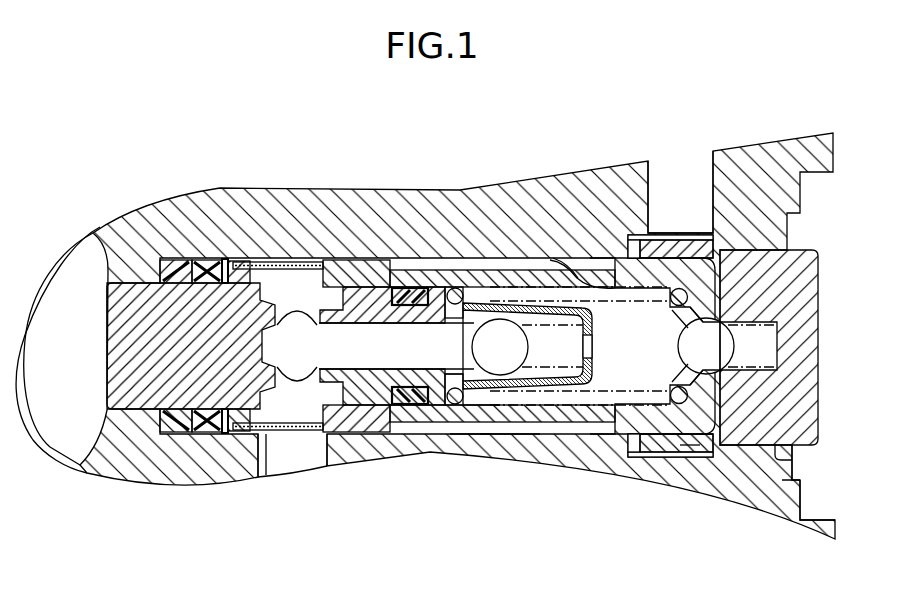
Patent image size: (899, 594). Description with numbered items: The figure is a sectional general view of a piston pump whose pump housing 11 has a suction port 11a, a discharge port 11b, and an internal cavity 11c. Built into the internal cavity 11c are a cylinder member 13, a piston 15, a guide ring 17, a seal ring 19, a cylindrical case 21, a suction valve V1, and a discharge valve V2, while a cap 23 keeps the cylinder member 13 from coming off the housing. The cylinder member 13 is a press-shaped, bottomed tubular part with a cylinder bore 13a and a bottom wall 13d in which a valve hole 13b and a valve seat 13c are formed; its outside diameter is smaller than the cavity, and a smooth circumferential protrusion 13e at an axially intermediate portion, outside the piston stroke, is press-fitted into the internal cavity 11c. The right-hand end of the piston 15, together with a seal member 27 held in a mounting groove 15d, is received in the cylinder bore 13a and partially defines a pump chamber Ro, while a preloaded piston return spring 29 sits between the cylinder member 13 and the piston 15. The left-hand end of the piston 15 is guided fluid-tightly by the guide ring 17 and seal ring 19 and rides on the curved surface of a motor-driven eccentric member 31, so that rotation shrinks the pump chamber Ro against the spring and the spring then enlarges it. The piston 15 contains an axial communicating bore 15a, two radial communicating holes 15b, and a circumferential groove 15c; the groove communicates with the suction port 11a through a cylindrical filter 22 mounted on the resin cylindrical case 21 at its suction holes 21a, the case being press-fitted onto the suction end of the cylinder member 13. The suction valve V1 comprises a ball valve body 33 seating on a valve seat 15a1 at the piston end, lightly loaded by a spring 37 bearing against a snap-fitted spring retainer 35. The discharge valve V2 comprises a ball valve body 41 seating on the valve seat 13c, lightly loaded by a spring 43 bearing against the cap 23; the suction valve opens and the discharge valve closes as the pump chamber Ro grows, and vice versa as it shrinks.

The pump housing 11 is at (400, 207).
The suction port 11a is at (298, 455).
The discharge port 11b is at (672, 168).
The internal cavity 11c is at (516, 428).
The cylinder member 13 is at (549, 277).
The cylinder bore 13a is at (470, 410).
The valve hole 13b is at (680, 372).
The valve seat 13c is at (712, 436).
The bottom wall 13d is at (690, 448).
The circumferential protrusion 13e is at (585, 265).
The piston 15 is at (228, 300).
The communicating bore 15a is at (377, 420).
The valve seat 15a1 is at (490, 400).
The communicating holes 15b is at (295, 322).
The circumferential groove 15c is at (343, 425).
The mounting groove 15d is at (422, 420).
The guide ring 17 is at (172, 434).
The seal ring 19 is at (212, 434).
The cylindrical case 21 is at (277, 263).
The suction holes 21a is at (268, 423).
The filter 22 is at (263, 455).
The cap 23 is at (772, 282).
The seal member 27 is at (412, 400).
The piston return spring 29 is at (673, 428).
The eccentric member 31 is at (63, 397).
The ball valve body 33 is at (510, 364).
The spring retainer 35 is at (590, 318).
The spring 37 is at (560, 378).
The ball valve body 41 is at (735, 448).
The spring 43 is at (770, 448).
The pump chamber Ro is at (608, 440).
The suction valve V1 is at (506, 326).
The discharge valve V2 is at (718, 341).